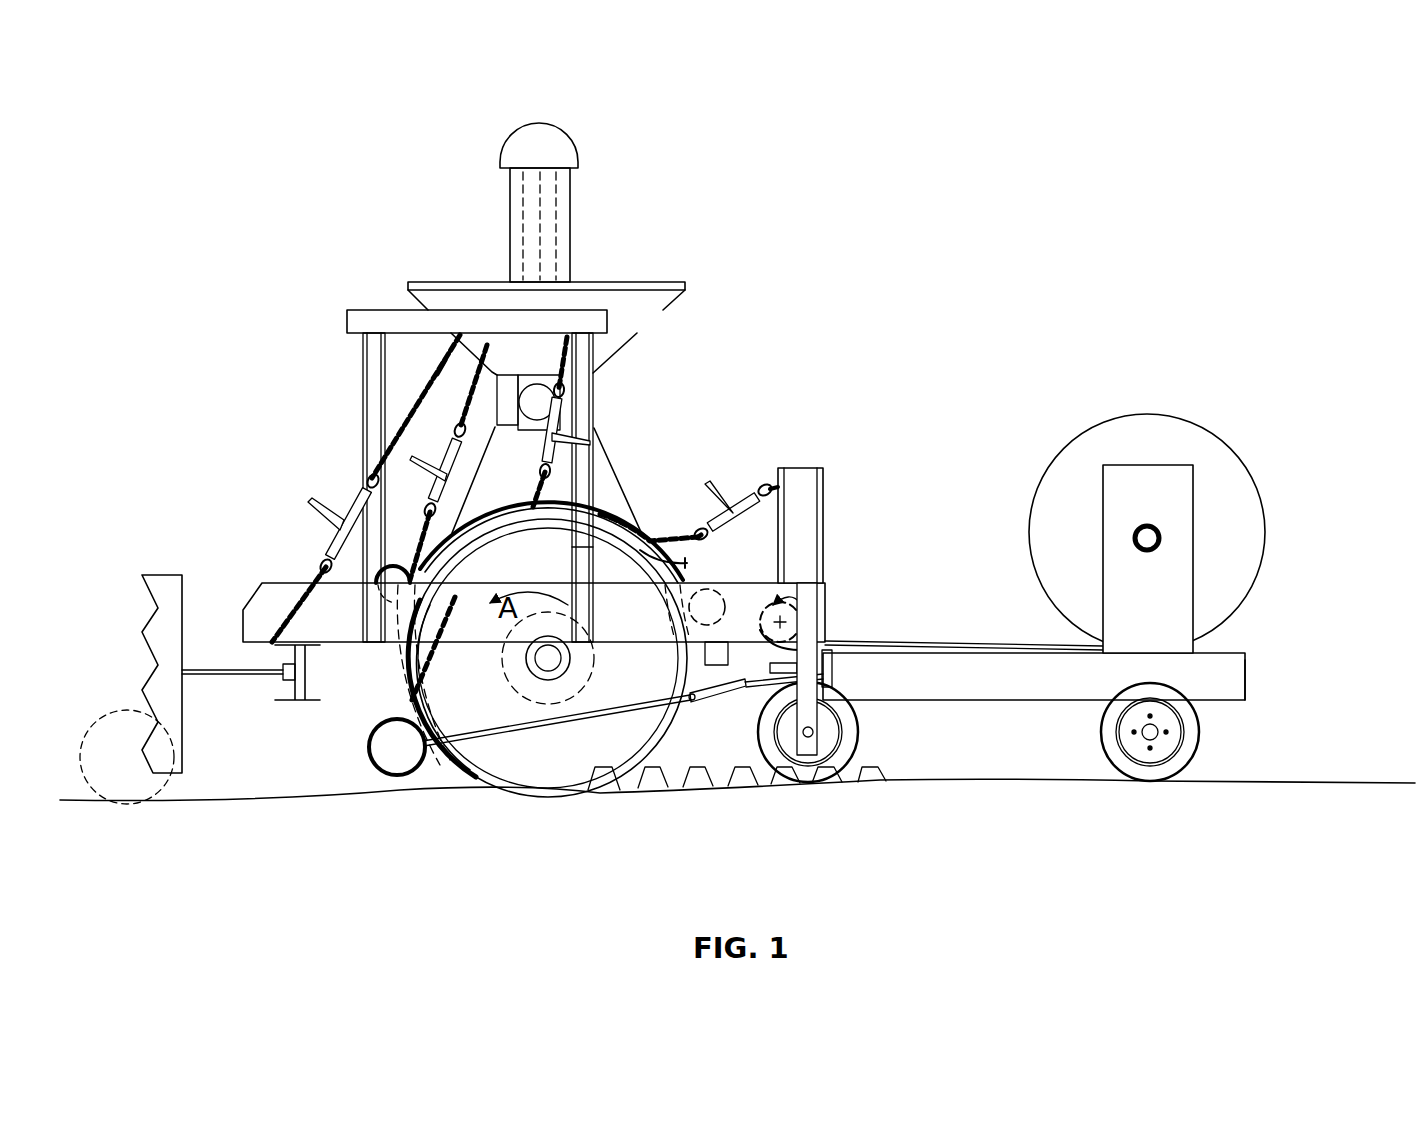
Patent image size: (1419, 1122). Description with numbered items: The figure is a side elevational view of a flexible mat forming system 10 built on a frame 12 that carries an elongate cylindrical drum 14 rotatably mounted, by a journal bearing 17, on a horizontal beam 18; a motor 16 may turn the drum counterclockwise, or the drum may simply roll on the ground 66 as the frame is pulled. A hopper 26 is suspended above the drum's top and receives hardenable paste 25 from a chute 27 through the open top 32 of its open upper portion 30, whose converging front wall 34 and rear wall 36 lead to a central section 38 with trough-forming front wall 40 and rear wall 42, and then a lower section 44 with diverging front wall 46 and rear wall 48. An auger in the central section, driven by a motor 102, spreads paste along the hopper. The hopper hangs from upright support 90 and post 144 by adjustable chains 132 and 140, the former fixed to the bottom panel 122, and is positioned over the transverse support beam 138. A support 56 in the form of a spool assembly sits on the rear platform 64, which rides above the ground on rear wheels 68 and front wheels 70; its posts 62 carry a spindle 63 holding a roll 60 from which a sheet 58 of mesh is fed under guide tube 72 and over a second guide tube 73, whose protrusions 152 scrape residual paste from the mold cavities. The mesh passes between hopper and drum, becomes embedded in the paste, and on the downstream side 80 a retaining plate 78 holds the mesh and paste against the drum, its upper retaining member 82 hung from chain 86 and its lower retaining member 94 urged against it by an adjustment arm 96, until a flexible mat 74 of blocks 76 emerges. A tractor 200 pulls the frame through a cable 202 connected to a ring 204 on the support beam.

The flexible mat forming system 10 is at (843, 455).
The frame 12 is at (1240, 667).
The drum 14 is at (642, 720).
The motor 16 is at (598, 680).
The journal bearing 17 is at (532, 668).
The horizontal beam 18 is at (462, 632).
The hardenable paste 25 is at (510, 210).
The hopper 26 is at (612, 455).
The chute 27 is at (540, 125).
The open upper portion 30 is at (645, 315).
The open top 32 is at (612, 290).
The front wall 34 is at (622, 345).
The rear wall 36 is at (465, 362).
The central section 38 is at (437, 364).
The front wall 40 is at (492, 395).
The rear wall 42 is at (600, 408).
The lower section 44 is at (622, 478).
The front wall 46 is at (460, 500).
The rear wall 48 is at (622, 498).
The support 56 is at (1173, 528).
The sheet of mesh material 58 is at (925, 642).
The roll 60 is at (1190, 438).
The post 62 is at (1197, 550).
The spindle 63 is at (1142, 540).
The rear platform 64 is at (1230, 698).
The ground 66 is at (1310, 782).
The rear wheel 68 is at (1192, 735).
The front wheel 70 is at (850, 732).
The guide tube 72 is at (795, 602).
The second guide tube 73 is at (713, 600).
The flexible mat 74 is at (778, 776).
The block 76 is at (822, 776).
The retaining plate 78 is at (402, 700).
The downstream side 80 is at (388, 683).
The upper retaining member 82 is at (388, 595).
The adjustable cable or chain 86 is at (400, 438).
The upright support 90 is at (375, 320).
The lower retaining member 94 is at (395, 772).
The adjustment arm 96 is at (543, 722).
The motor 102 is at (522, 432).
The panel 122 is at (660, 534).
The adjustable cable or chain 132 is at (565, 345).
The transverse support beam 138 is at (292, 685).
The adjustable cable or chain 140 is at (763, 485).
The post 144 is at (812, 530).
The protrusion 152 is at (668, 622).
The tractor 200 is at (178, 578).
The cable 202 is at (184, 670).
The ring 204 is at (282, 672).